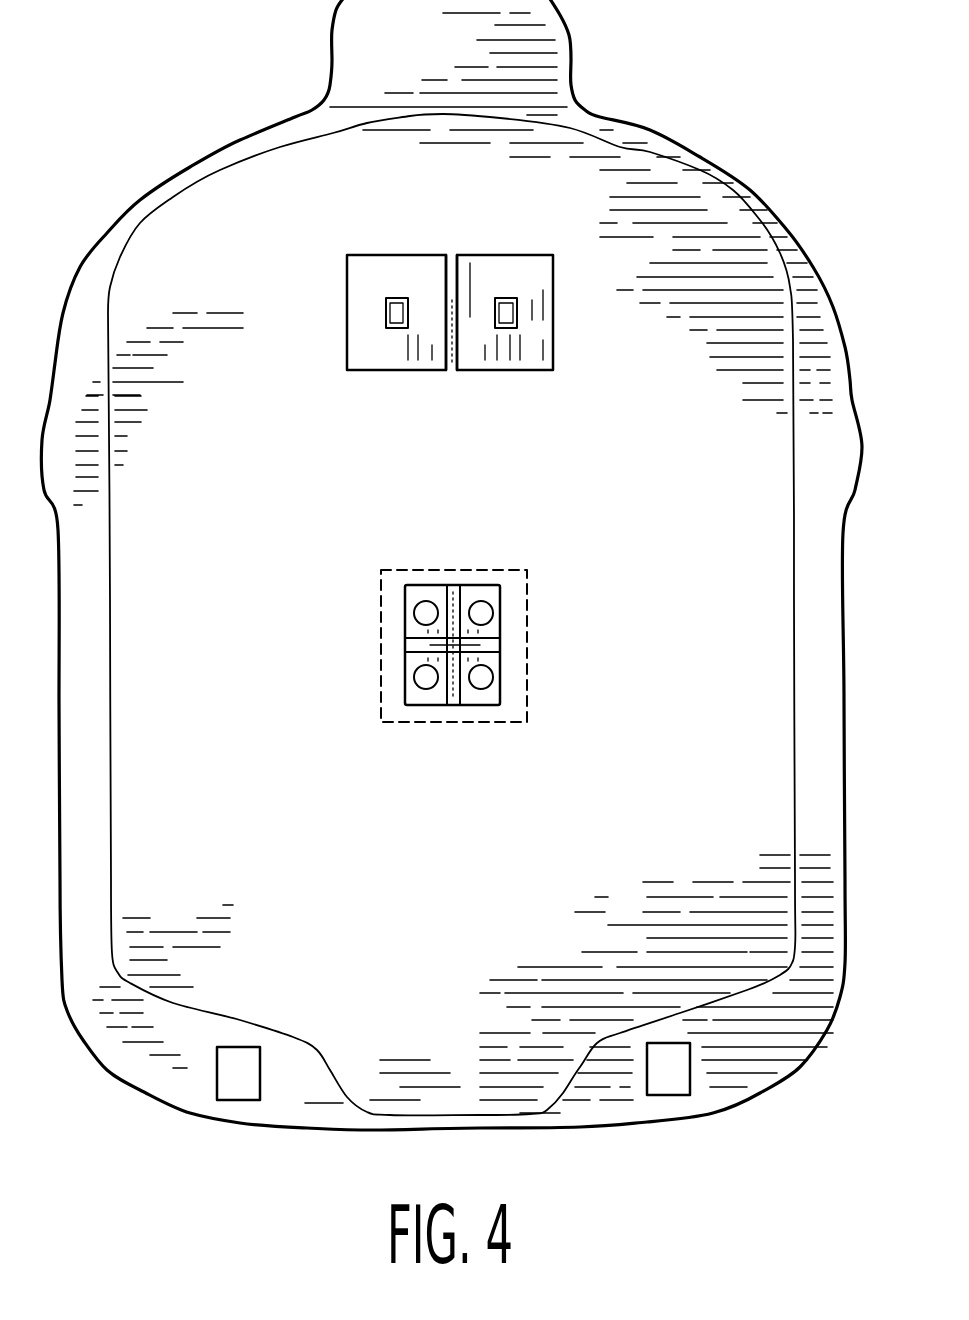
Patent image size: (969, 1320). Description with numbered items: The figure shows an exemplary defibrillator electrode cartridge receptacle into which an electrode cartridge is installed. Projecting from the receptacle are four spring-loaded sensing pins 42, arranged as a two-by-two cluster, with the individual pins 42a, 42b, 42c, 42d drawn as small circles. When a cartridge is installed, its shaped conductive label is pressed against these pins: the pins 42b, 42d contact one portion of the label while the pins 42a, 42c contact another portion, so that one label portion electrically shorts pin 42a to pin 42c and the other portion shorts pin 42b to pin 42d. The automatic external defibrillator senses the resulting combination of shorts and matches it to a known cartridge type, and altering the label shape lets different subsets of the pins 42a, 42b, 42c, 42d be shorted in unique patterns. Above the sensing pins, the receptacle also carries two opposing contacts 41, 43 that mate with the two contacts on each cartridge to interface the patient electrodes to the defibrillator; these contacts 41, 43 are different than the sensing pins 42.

The left button panel 41 is at (387, 313).
The right button panel 43 is at (513, 315).
The spring-loaded pins 42 is at (452, 703).
The pin 42a is at (417, 603).
The pin 42b is at (483, 603).
The pin 42c is at (425, 690).
The pin 42d is at (480, 688).